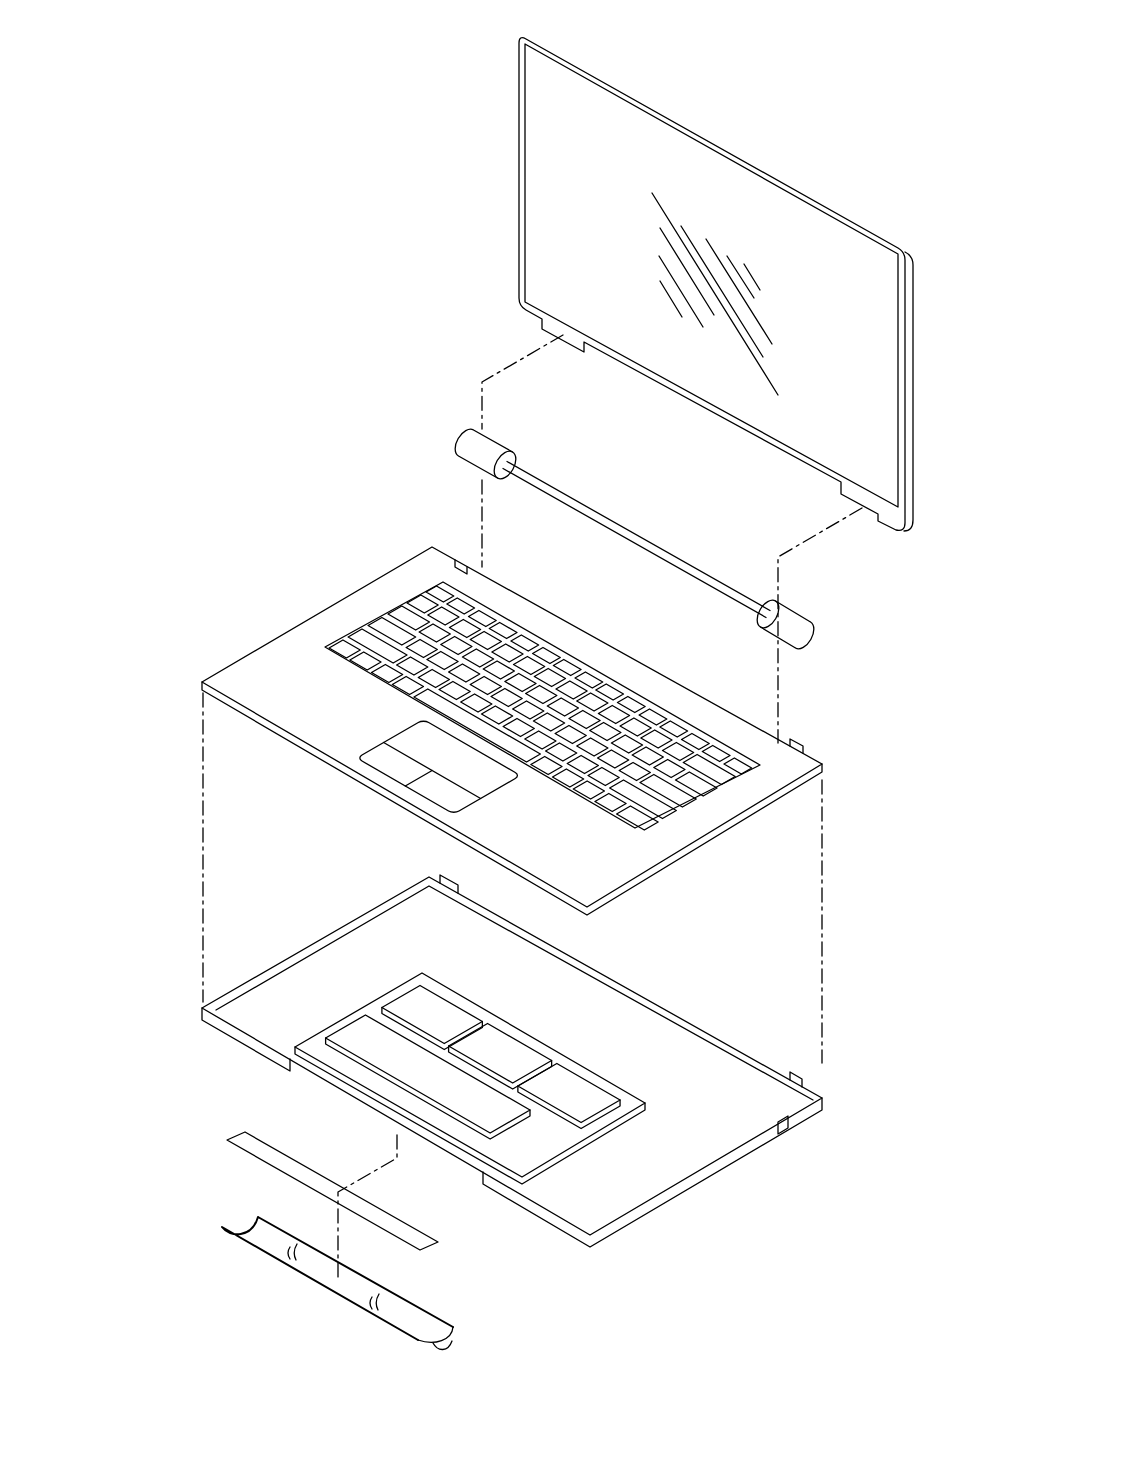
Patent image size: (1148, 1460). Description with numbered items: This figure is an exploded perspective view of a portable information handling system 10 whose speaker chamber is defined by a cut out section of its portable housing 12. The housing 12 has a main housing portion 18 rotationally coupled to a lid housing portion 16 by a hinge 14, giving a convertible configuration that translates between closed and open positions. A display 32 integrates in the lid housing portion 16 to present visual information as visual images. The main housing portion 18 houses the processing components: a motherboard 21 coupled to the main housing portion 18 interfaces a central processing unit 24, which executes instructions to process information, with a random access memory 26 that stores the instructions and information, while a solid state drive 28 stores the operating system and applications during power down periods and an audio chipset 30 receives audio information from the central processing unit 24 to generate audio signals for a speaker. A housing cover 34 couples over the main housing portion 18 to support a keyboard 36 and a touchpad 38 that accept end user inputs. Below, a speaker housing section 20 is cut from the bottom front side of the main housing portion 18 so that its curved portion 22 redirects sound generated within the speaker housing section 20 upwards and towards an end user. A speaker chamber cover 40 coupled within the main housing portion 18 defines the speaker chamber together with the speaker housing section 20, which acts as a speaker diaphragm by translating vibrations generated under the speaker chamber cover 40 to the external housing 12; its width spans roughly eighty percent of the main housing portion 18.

The portable information handling system 10 is at (288, 256).
The housing 12 is at (186, 1044).
The hinge 14 is at (812, 633).
The lid housing portion 16 is at (805, 186).
The main housing portion 18 is at (753, 1150).
The speaker housing section 20 is at (265, 1253).
The motherboard 21 is at (533, 1142).
The curved portion 22 is at (452, 1341).
The central processing unit 24 is at (400, 1003).
The random access memory 26 is at (492, 1030).
The solid state drive 28 is at (597, 1105).
The audio chipset 30 is at (350, 1033).
The display 32 is at (635, 125).
The housing cover 34 is at (243, 663).
The keyboard 36 is at (393, 612).
The touchpad 38 is at (408, 755).
The speaker chamber cover 40 is at (240, 1142).